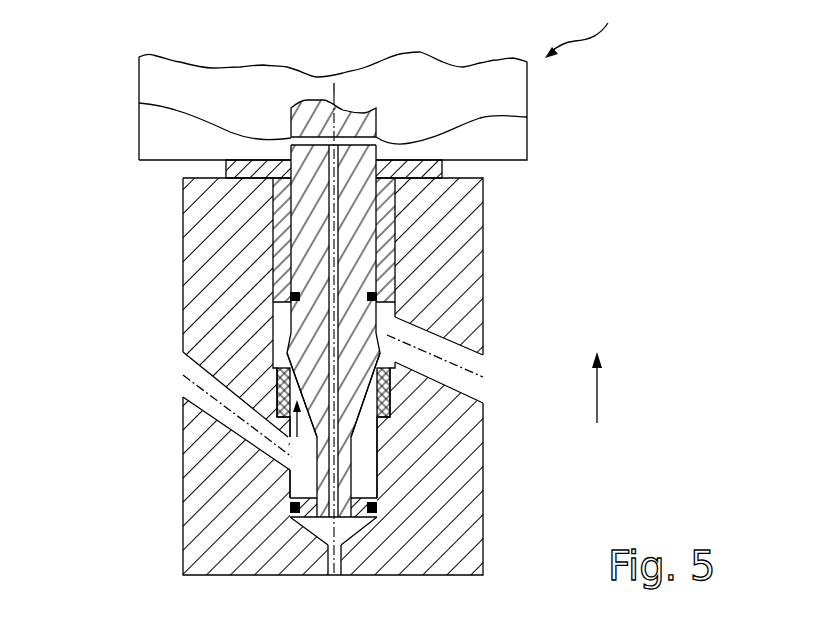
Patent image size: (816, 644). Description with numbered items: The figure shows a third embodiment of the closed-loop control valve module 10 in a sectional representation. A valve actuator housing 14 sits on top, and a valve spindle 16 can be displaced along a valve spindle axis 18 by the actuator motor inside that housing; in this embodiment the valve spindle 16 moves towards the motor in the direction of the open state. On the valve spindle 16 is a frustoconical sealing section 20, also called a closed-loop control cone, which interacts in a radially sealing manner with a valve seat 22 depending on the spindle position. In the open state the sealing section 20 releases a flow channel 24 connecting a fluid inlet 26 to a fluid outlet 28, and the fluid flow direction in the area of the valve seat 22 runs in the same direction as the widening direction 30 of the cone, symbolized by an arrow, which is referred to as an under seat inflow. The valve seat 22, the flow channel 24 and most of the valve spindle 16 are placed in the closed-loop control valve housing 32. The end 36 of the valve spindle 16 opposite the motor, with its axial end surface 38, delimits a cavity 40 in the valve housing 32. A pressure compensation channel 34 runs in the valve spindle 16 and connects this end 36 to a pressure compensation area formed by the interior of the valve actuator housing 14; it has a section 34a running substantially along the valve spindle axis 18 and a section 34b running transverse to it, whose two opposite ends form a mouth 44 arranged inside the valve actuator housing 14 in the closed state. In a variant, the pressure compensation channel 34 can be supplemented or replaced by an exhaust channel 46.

The closed-loop control valve module 10 is at (582, 29).
The valve actuator housing 14 is at (139, 72).
The valve spindle 16 is at (367, 212).
The valve spindle axis 18 is at (334, 83).
The frustoconical sealing section 20 is at (372, 372).
The valve seat 22 is at (350, 400).
The flow channel 24 is at (297, 437).
The fluid inlet 26 is at (192, 368).
The fluid outlet 28 is at (468, 365).
The widening direction 30 is at (598, 398).
The closed-loop control valve housing 32 is at (198, 550).
The pressure compensation channel 34 is at (438, 327).
The pressure compensation channel section 34a is at (335, 253).
The pressure compensation channel section 34b is at (360, 143).
The end of the valve spindle 36 is at (315, 503).
The axial end surface 38 is at (348, 517).
The cavity 40 is at (360, 523).
The mouth 44 is at (139, 103).
The exhaust channel 46 is at (327, 557).